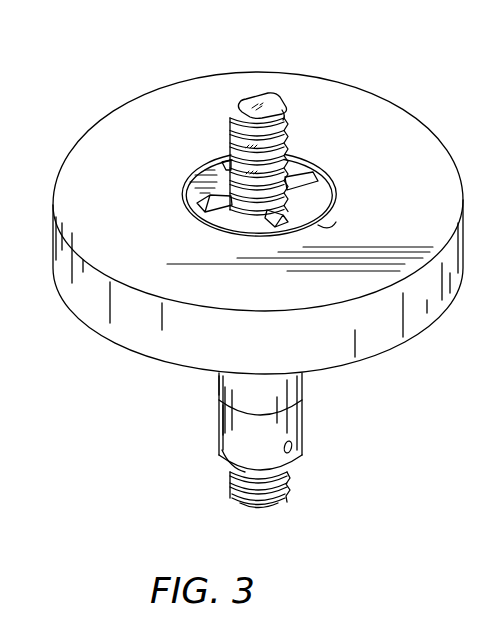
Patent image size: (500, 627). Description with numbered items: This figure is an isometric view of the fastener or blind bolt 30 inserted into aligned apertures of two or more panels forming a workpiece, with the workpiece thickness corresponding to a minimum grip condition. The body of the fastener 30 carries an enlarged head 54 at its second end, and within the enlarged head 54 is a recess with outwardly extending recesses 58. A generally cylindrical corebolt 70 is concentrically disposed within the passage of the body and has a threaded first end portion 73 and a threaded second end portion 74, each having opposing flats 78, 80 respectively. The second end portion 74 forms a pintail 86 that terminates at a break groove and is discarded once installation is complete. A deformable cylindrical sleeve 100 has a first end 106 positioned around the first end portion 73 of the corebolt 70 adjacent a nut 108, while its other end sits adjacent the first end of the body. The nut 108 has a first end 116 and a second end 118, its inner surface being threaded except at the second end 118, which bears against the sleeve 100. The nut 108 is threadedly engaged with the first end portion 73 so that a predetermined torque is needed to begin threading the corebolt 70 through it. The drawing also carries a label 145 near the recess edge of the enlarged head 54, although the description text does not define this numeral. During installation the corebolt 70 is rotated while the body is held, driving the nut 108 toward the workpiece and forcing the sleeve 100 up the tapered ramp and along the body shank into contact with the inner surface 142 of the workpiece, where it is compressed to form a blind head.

The fastener or blind bolt 30 is at (158, 452).
The enlarged head 54 is at (481, 613).
The outwardly extending recesses 58 is at (208, 193).
The corebolt 70 is at (262, 100).
The first end portion 73 is at (273, 500).
The second end portion 74 is at (247, 99).
The opposing flats 78 is at (283, 480).
The opposing flats 80 is at (283, 118).
The pintail 86 is at (228, 147).
The deformable cylindrical sleeve 100 is at (302, 376).
The first end of the sleeve 106 is at (220, 383).
The nut 108 is at (230, 462).
The first end of the nut 116 is at (302, 437).
The second end of the nut 118 is at (230, 415).
The inner surface of the workpiece 142 is at (409, 338).
The recess edge 145 is at (323, 227).